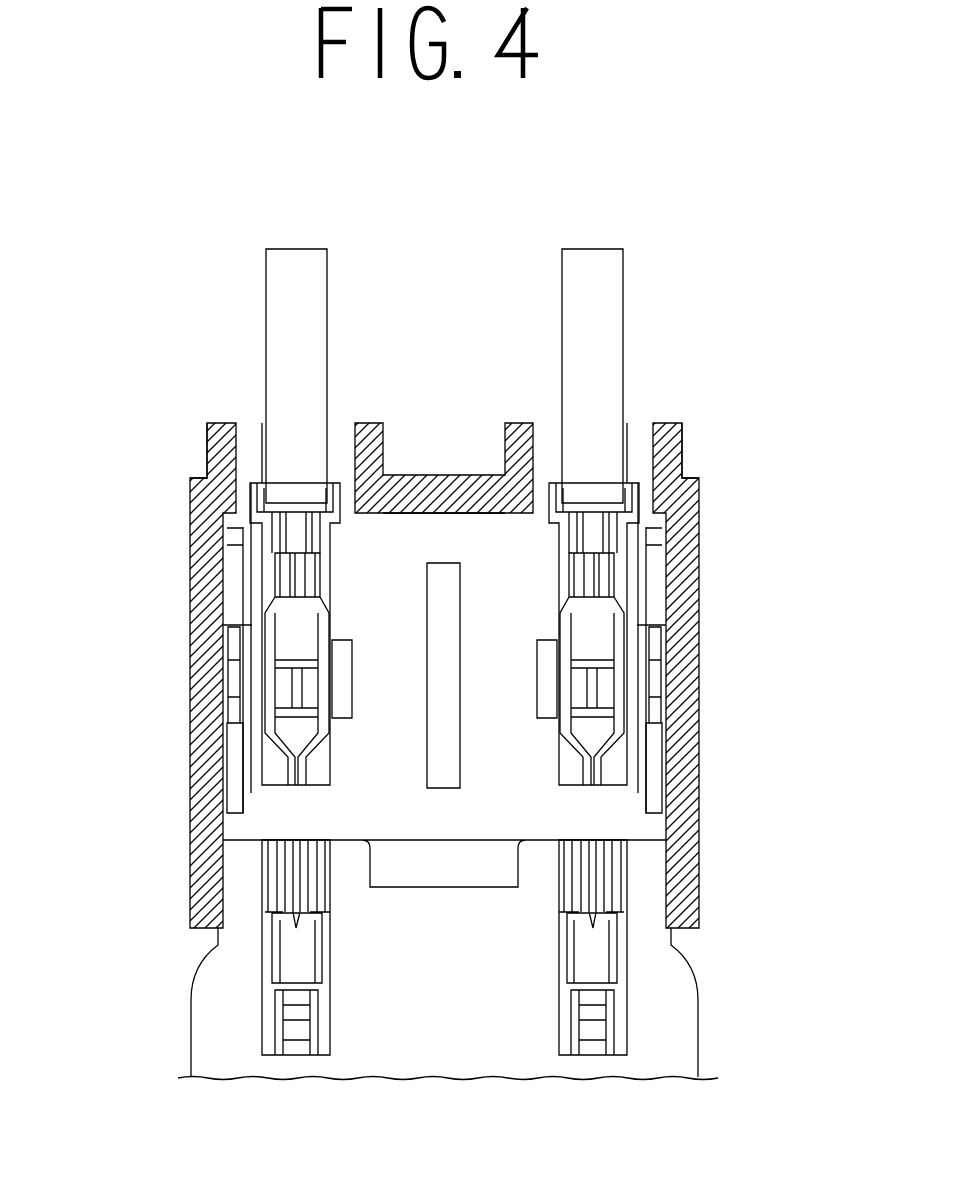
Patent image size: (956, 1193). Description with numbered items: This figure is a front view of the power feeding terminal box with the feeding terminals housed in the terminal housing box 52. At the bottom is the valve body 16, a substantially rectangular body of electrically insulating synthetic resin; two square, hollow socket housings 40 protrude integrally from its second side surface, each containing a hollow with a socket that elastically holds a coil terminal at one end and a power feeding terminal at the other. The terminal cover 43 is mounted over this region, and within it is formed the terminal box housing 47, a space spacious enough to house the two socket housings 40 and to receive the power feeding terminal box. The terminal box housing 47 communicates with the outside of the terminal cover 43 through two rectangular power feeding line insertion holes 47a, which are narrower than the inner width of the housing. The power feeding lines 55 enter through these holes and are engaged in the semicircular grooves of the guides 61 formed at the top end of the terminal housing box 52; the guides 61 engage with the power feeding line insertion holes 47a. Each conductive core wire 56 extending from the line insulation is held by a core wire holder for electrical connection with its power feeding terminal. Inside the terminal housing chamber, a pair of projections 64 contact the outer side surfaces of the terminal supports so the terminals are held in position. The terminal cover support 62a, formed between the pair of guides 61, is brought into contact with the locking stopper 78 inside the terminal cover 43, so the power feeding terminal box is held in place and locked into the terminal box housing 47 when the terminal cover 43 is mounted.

The valve body 16 is at (468, 1057).
The socket housing 40 is at (243, 870).
The terminal cover 43 is at (683, 640).
The terminal box housing 47 is at (232, 580).
The power feeding line insertion hole 47a is at (243, 458).
The terminal housing box 52 is at (303, 803).
The power feeding line 55 is at (317, 283).
The conductive core wire 56 is at (292, 533).
The guide 61 is at (252, 428).
The terminal cover support 62a is at (463, 520).
The projection 64 is at (250, 703).
The locking stopper 78 is at (413, 520).